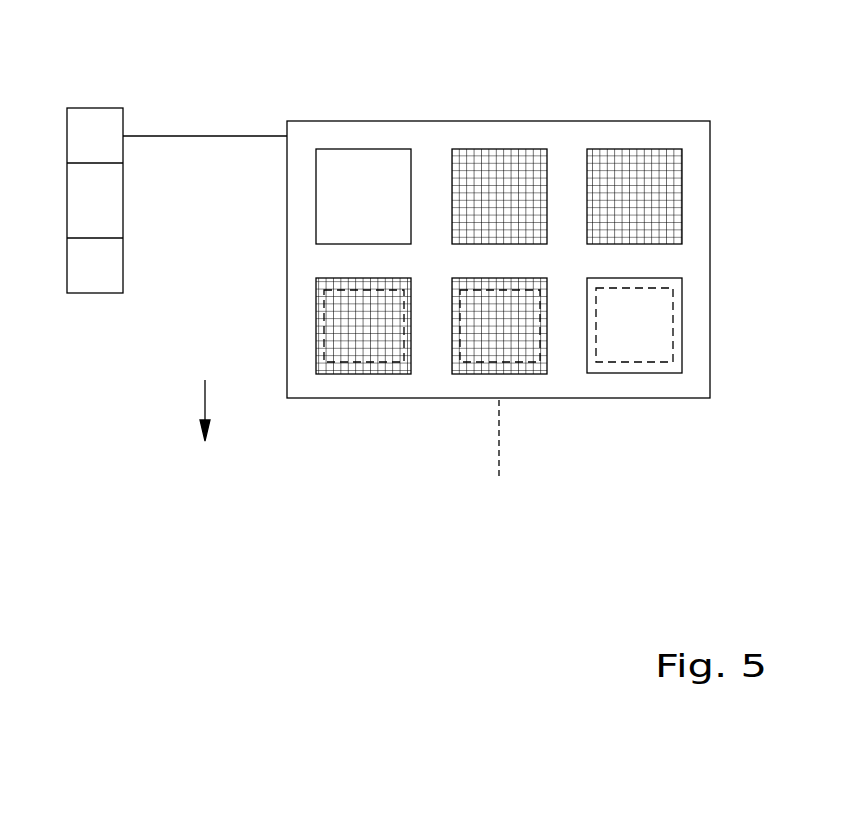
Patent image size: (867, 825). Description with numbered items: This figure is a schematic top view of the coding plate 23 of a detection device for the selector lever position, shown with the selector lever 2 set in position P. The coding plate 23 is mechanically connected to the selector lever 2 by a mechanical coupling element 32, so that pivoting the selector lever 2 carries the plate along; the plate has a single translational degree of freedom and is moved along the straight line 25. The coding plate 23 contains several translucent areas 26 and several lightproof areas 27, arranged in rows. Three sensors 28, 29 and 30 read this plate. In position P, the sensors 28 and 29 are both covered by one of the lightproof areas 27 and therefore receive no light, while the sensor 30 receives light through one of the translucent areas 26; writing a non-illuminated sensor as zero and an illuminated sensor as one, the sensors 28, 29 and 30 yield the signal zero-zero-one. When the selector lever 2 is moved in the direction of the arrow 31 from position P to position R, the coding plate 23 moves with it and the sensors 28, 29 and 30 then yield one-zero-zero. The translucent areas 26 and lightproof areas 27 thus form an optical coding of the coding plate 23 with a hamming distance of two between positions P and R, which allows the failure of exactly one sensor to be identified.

The selector lever 2 is at (125, 108).
The mechanical coupling element 32 is at (200, 136).
The coding plate 23 is at (432, 143).
The straight line 25 is at (499, 440).
The translucent areas 26 is at (355, 170).
The lightproof areas 27 is at (510, 150).
The sensor 28 is at (372, 373).
The sensor 29 is at (520, 373).
The sensor 30 is at (665, 362).
The arrow 31 is at (204, 407).